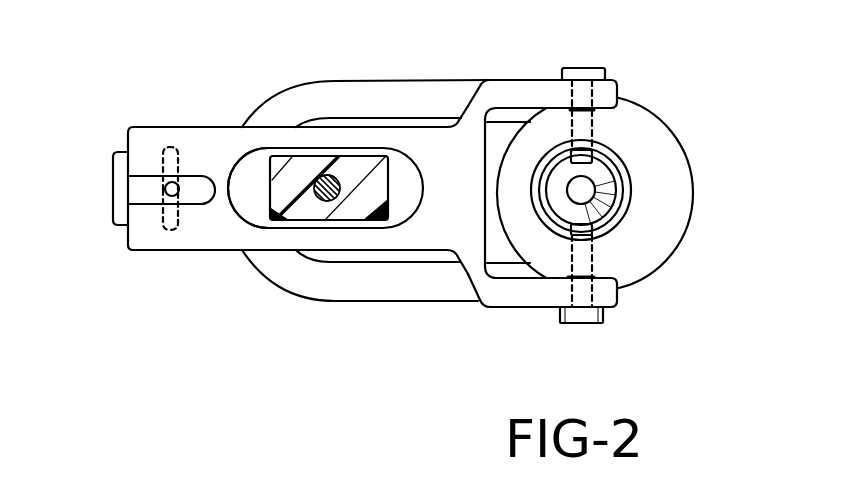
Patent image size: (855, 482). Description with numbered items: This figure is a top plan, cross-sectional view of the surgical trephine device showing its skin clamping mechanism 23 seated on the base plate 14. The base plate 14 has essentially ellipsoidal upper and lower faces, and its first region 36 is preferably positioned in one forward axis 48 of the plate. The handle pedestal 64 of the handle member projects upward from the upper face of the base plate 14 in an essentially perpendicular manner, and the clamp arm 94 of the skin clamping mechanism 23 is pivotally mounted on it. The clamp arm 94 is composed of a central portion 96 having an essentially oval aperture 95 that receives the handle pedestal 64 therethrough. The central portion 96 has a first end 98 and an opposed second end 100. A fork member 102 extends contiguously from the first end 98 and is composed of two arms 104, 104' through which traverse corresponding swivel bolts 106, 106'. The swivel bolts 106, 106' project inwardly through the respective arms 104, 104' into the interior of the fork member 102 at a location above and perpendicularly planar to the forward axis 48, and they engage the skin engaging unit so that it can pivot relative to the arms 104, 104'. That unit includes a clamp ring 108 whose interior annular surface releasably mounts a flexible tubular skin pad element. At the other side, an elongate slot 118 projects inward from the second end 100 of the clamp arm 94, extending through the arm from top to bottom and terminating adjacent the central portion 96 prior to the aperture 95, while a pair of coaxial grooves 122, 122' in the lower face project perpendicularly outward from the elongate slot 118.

The base plate 14 is at (348, 82).
The skin clamping mechanism 23 is at (540, 23).
The first region 36 is at (685, 228).
The forward axis 48 is at (592, 184).
The handle pedestal 64 is at (283, 218).
The clamp arm 94 is at (136, 126).
The aperture 95 is at (240, 167).
The central portion 96 is at (315, 240).
The first end 98 is at (445, 248).
The second end 100 is at (133, 250).
The fork member 102 is at (510, 303).
The arm 104 is at (601, 88).
The arm 104' is at (612, 290).
The swivel bolt 106 is at (602, 84).
The swivel bolt 106' is at (627, 292).
The clamp ring 108 is at (653, 193).
The elongate slot 118 is at (127, 200).
The coaxial groove 122 is at (187, 105).
The coaxial groove 122' is at (149, 275).